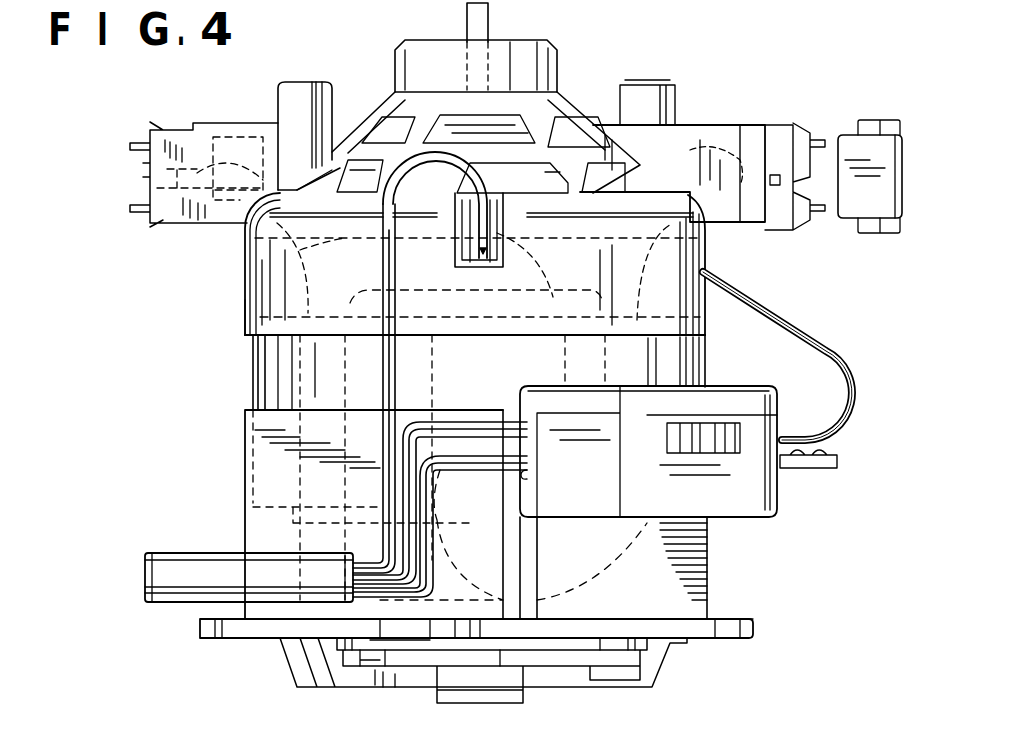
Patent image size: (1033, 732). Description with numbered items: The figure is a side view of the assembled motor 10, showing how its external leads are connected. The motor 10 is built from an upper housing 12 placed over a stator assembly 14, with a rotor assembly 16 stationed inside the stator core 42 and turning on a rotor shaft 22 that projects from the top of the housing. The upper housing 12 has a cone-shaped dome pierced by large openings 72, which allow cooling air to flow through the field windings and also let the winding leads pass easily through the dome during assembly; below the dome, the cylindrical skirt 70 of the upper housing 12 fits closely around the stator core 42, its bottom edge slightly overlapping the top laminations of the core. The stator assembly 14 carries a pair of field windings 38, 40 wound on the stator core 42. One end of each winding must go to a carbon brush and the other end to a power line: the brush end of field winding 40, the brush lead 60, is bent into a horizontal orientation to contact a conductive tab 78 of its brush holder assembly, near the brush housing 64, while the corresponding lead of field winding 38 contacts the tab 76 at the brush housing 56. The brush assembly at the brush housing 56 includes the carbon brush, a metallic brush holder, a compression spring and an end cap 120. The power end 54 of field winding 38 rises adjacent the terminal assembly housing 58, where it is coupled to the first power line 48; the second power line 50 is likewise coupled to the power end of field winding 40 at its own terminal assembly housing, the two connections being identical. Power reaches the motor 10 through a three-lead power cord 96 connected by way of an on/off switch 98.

The motor 10 is at (693, 95).
The upper housing 12 is at (713, 253).
The stator assembly 14 is at (710, 375).
The rotor assembly 16 is at (500, 120).
The rotor shaft 22 is at (465, 23).
The field winding 38 is at (612, 585).
The field winding 40 is at (297, 477).
The stator core 42 is at (268, 373).
The first power line 48 is at (382, 270).
The second power line 50 is at (790, 318).
The power end 54 is at (485, 275).
The brush housing 56 is at (722, 115).
The terminal assembly housing 58 is at (517, 233).
The brush lead 60 is at (290, 233).
The brush housing 64 is at (220, 292).
The skirt 70 is at (243, 308).
The openings 72 is at (392, 133).
The tab 76 is at (765, 195).
The tab 78 is at (182, 173).
The power cord 96 is at (193, 553).
The on/off switch 98 is at (745, 498).
The end cap 120 is at (873, 117).